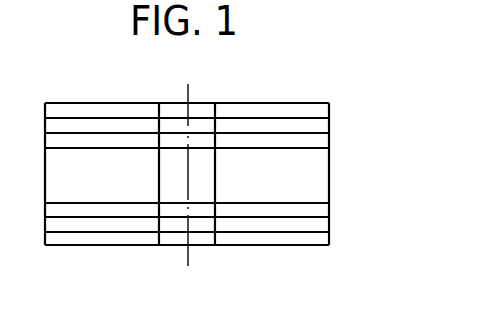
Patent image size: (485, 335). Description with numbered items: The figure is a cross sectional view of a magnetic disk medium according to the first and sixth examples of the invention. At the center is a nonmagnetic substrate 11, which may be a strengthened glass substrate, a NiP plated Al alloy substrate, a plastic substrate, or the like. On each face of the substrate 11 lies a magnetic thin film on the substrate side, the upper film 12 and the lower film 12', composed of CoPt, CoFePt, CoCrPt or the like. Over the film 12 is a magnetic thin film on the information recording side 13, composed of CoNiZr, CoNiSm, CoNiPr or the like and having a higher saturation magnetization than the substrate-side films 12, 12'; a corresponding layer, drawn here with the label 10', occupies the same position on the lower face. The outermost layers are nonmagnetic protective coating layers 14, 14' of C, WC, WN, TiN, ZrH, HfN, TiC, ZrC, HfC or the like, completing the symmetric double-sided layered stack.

The nonmagnetic protective coating layer 14 is at (225, 91).
The magnetic thin film on the information recording side 13 is at (322, 125).
The magnetic thin film on the substrate side 12 is at (225, 157).
The nonmagnetic substrate 11 is at (320, 178).
The magnetic thin film on the substrate side 12' is at (229, 229).
The base layer 10' is at (229, 256).
The nonmagnetic protective coating layer 14' is at (229, 282).